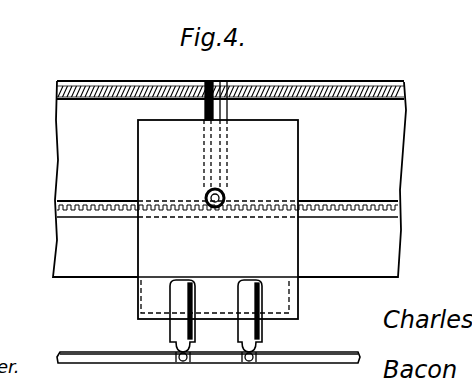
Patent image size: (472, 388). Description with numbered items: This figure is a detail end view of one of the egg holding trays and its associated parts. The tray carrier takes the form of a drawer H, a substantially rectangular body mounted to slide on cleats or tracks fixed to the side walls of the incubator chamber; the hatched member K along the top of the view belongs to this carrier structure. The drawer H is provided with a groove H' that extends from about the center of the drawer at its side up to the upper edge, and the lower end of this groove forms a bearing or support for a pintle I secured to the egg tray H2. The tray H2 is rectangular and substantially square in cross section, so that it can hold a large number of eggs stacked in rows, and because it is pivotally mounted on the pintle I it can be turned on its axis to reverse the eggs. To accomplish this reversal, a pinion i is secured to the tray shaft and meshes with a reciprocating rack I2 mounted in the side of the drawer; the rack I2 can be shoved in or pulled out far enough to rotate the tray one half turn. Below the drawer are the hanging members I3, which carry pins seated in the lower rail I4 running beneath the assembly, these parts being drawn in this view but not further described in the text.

The drawer H is at (229, 179).
The hatched top bar K is at (145, 86).
The groove H' is at (219, 125).
The egg tray H2 is at (218, 219).
The pintle I is at (300, 283).
The reciprocating rack I2 is at (86, 217).
The pinion i is at (205, 193).
The hangers I3 is at (238, 288).
The rail I4 is at (121, 352).